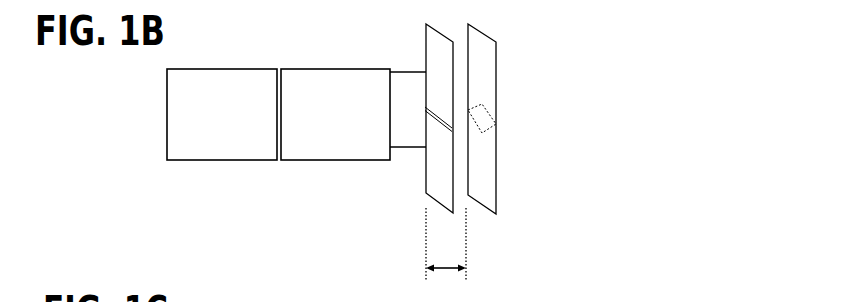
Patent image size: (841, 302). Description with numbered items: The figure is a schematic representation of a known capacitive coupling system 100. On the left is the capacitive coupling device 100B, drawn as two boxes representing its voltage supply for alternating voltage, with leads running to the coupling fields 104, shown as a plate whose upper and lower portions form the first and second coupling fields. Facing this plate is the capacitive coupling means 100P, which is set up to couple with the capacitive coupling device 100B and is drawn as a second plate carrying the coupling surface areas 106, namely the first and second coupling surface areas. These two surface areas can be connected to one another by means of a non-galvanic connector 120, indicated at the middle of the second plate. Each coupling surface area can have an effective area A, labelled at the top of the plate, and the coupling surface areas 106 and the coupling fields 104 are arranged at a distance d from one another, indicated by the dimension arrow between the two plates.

The capacitive coupling system 100 is at (660, 104).
The capacitive coupling device 100B is at (158, 137).
The capacitive coupling means 100P is at (522, 150).
The coupling fields 104 is at (431, 63).
The coupling surface areas 106 is at (481, 92).
The non-galvanic connector 120 is at (483, 121).
The effective area A is at (476, 52).
The distance d is at (446, 244).